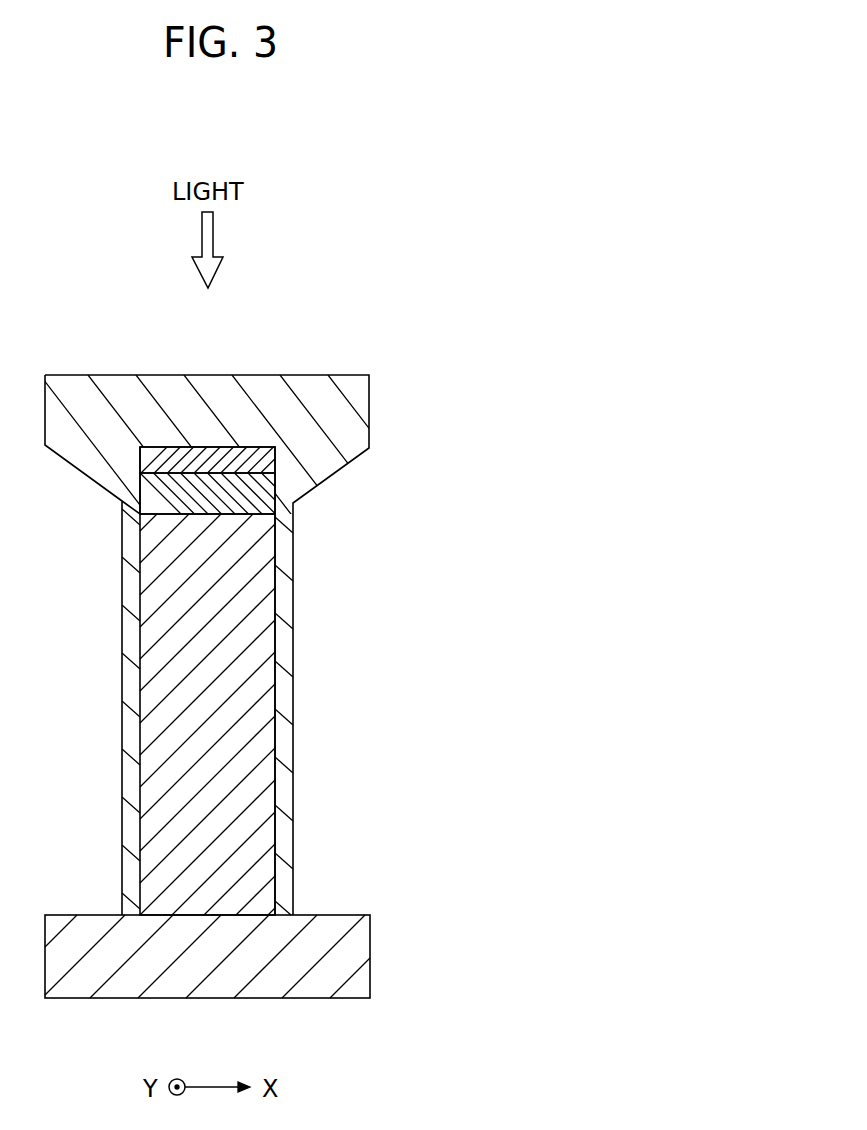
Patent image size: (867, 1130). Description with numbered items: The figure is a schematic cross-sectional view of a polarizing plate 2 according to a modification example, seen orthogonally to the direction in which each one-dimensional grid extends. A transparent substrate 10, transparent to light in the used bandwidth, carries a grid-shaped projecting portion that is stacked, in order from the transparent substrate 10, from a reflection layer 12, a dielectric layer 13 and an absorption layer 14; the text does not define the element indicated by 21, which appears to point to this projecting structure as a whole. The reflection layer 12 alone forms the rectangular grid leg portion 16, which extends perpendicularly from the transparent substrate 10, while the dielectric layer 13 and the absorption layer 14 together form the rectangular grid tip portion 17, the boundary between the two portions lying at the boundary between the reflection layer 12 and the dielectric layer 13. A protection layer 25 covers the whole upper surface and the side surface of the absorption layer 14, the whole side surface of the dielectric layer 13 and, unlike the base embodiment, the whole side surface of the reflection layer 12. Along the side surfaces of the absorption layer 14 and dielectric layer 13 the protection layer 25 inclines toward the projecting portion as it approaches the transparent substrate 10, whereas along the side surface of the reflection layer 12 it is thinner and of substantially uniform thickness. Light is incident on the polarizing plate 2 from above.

The polarizing plate 2 is at (363, 95).
The photoelectric conversion element 21 is at (376, 221).
The protection layer 25 is at (318, 408).
The grid tip portion 17 is at (462, 475).
The absorption layer 14 is at (277, 457).
The dielectric layer 13 is at (277, 495).
The reflection layer 12 is at (319, 714).
The grid leg portion 16 is at (253, 772).
The transparent substrate 10 is at (342, 958).